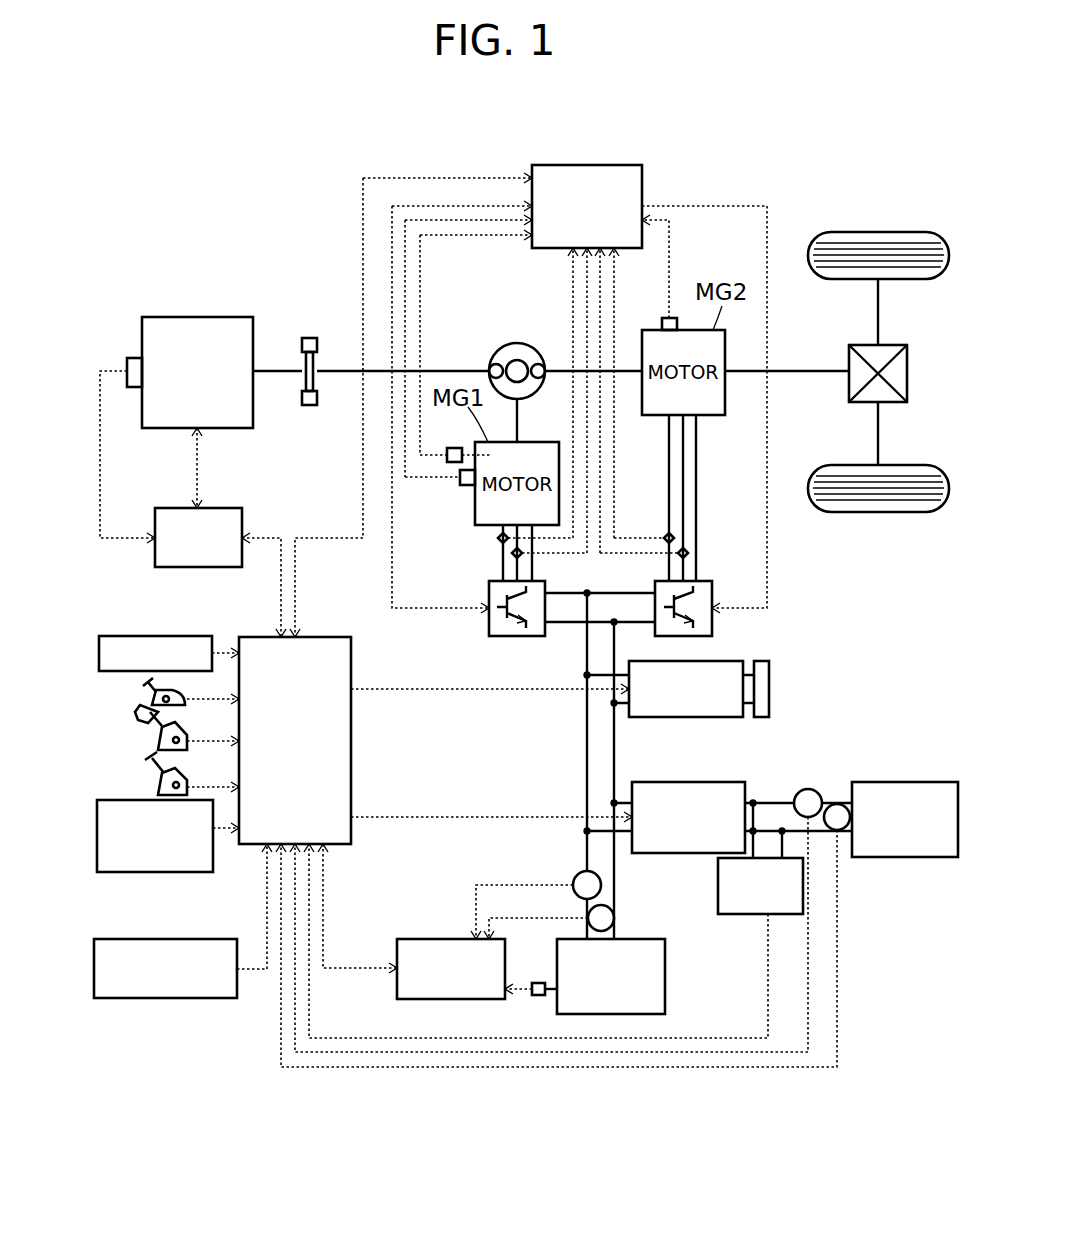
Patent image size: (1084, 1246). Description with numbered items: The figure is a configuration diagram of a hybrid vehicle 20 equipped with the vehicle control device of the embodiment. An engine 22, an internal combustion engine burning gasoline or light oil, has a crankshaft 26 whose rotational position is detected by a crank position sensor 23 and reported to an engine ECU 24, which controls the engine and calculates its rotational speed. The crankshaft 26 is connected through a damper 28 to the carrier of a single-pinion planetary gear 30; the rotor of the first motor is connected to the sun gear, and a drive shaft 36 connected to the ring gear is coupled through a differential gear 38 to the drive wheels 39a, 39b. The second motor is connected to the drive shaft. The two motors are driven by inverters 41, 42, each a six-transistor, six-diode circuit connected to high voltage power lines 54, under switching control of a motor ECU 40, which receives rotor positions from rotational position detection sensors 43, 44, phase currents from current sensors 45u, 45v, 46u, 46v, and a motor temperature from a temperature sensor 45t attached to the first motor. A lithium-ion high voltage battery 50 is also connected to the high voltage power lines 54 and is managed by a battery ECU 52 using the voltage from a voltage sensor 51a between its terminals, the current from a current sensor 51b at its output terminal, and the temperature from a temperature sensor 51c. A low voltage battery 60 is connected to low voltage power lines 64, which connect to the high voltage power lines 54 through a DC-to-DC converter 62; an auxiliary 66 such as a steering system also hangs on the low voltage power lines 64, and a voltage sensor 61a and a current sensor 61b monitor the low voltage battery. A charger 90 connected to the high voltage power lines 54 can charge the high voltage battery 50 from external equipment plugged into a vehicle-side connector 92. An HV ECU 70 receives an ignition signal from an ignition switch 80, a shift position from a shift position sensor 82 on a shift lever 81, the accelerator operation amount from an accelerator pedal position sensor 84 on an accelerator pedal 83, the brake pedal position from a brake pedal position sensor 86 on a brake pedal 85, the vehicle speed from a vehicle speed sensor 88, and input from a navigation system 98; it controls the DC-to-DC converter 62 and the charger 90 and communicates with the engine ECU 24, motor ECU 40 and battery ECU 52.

The hybrid vehicle 20 is at (722, 165).
The engine 22 is at (198, 317).
The crank position sensor 23 is at (134, 358).
The engine ECU 24 is at (222, 508).
The crankshaft 26 is at (272, 371).
The damper 28 is at (307, 338).
The planetary gear 30 is at (514, 343).
The drive shaft 36 is at (808, 371).
The differential gear 38 is at (885, 345).
The drive wheel 39a is at (877, 232).
The drive wheel 39b is at (878, 512).
The motor ECU 40 is at (585, 165).
The inverter 41 is at (489, 605).
The inverter 42 is at (655, 590).
The rotational position detection sensor 43 is at (462, 487).
The rotational position detection sensor 44 is at (675, 318).
The temperature sensor 45t is at (455, 439).
The current sensor 45u is at (498, 538).
The current sensor 45v is at (512, 553).
The current sensor 46u is at (674, 538).
The current sensor 46v is at (688, 553).
The high voltage battery 50 is at (665, 968).
The voltage sensor 51a is at (614, 918).
The current sensor 51b is at (601, 885).
The temperature sensor 51c is at (538, 995).
The battery ECU 52 is at (450, 939).
The high voltage power lines 54 is at (614, 637).
The low voltage battery 60 is at (890, 782).
The voltage sensor 61a is at (838, 804).
The current sensor 61b is at (806, 789).
The DC-to-DC converter 62 is at (697, 853).
The low voltage power lines 64 is at (770, 831).
The auxiliary 66 is at (748, 914).
The HV ECU 70 is at (320, 637).
The ignition switch 80 is at (99, 653).
The shift lever 81 is at (147, 683).
The shift position sensor 82 is at (163, 699).
The accelerator pedal 83 is at (145, 714).
The accelerator pedal position sensor 84 is at (172, 741).
The brake pedal 85 is at (150, 760).
The brake pedal position sensor 86 is at (172, 786).
The vehicle speed sensor 88 is at (97, 828).
The charger 90 is at (692, 717).
The vehicle-side connector 92 is at (762, 717).
The navigation system 98 is at (94, 969).